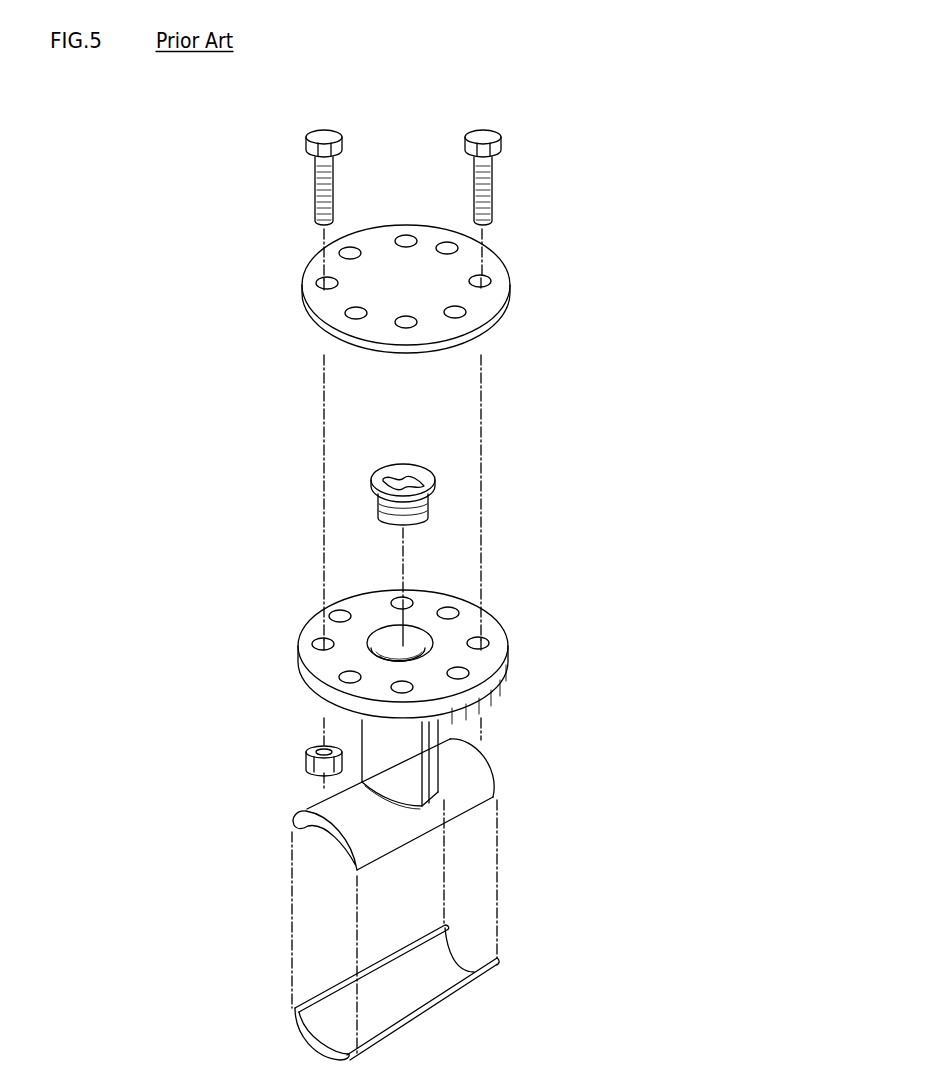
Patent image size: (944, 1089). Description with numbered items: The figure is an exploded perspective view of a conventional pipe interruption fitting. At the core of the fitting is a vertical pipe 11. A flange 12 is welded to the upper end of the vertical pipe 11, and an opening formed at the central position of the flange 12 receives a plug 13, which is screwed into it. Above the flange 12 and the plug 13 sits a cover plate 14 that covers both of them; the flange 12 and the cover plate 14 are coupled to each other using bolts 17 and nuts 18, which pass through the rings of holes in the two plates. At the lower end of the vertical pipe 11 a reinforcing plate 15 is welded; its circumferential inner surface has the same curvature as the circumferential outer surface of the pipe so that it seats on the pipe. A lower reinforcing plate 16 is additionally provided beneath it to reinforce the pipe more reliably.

The vertical pipe 11 is at (375, 762).
The flange 12 is at (318, 662).
The plug 13 is at (423, 478).
The cover plate 14 is at (453, 277).
The reinforcing plate 15 is at (418, 822).
The lower reinforcing plate 16 is at (417, 1013).
The bolts 17 is at (467, 135).
The nuts 18 is at (303, 760).